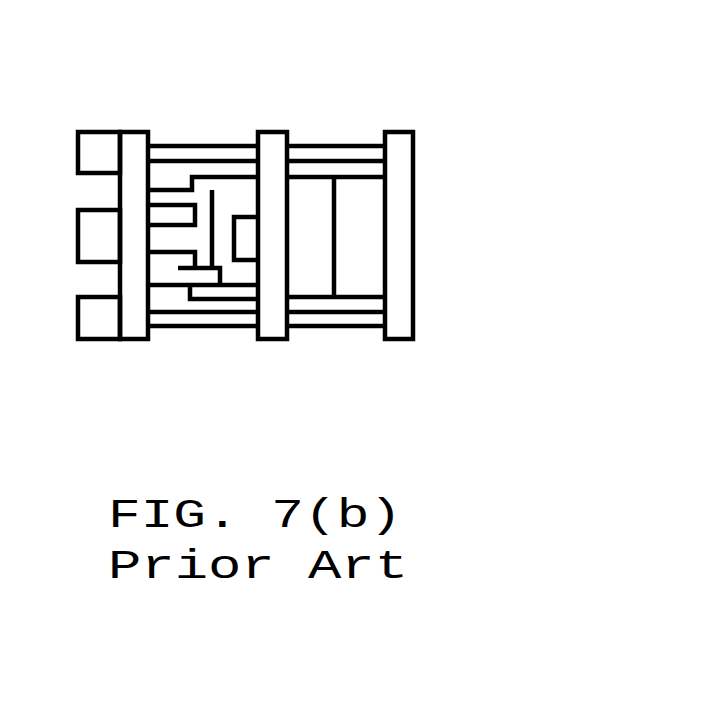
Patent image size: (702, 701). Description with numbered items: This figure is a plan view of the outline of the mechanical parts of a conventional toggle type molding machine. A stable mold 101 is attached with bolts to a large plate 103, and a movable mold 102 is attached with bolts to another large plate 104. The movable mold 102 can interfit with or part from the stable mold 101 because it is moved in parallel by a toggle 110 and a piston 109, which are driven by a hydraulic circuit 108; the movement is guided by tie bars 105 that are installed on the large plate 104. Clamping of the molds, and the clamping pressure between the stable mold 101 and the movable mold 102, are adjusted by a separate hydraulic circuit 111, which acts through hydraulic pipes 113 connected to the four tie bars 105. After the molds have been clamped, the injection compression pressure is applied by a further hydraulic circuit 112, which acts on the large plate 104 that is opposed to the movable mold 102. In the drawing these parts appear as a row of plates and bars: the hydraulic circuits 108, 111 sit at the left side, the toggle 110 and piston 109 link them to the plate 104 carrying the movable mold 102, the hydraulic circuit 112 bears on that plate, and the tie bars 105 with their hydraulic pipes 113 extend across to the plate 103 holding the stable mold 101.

The stable mold 101 is at (362, 218).
The movable mold 102 is at (315, 258).
The large plate 103 is at (403, 152).
The large plate 104 is at (277, 145).
The tie bars 105 is at (333, 318).
The hydraulic circuit 108 is at (100, 247).
The piston 109 is at (177, 242).
The toggle 110 is at (204, 189).
The hydraulic circuit 111 is at (101, 145).
The hydraulic circuit 112 is at (247, 228).
The hydraulic pipes 113 is at (233, 318).